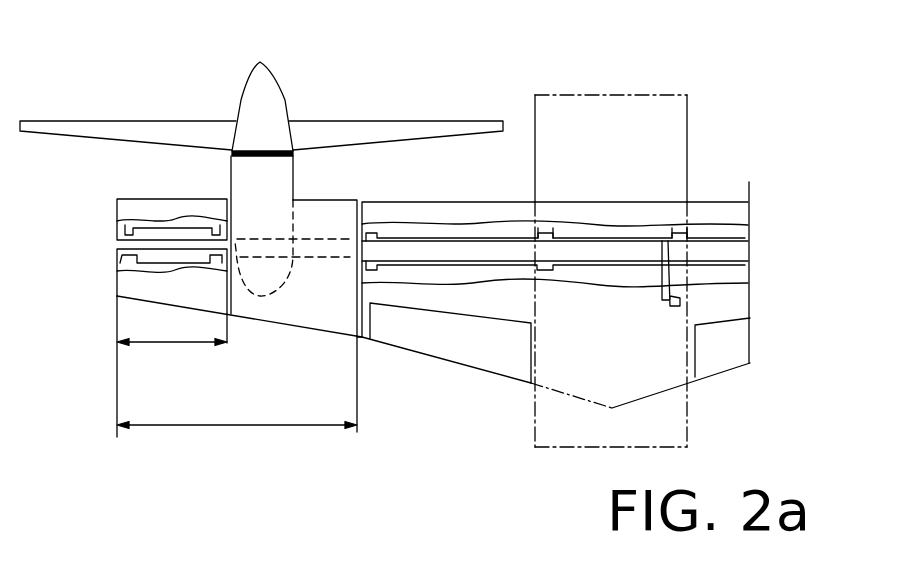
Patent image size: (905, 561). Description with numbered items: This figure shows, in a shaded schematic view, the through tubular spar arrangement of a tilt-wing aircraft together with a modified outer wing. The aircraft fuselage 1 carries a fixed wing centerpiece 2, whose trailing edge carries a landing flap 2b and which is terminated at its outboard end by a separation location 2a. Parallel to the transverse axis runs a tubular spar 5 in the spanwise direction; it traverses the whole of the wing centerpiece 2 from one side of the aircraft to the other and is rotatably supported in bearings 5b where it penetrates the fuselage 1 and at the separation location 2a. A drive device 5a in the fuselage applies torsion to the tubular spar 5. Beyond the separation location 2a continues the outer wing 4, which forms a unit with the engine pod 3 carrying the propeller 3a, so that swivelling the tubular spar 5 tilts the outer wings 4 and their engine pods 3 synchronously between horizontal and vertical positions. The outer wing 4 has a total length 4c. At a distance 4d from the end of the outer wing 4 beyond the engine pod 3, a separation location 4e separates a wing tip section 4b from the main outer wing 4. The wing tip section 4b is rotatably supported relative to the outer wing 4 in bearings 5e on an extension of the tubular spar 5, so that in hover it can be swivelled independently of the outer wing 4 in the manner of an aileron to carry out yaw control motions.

The aircraft fuselage 1 is at (667, 157).
The wing centerpiece 2 is at (447, 293).
The separation location 2a is at (365, 343).
The landing flap 2b is at (468, 353).
The engine pod 3 is at (268, 93).
The propeller 3a is at (152, 122).
The outer wing 4 is at (321, 294).
The wing tip section 4b is at (130, 283).
The total length 4c is at (227, 426).
The distance 4d is at (157, 343).
The separation location 4e is at (233, 326).
The tubular spar 5 is at (457, 247).
The drive device 5a is at (677, 306).
The bearings 5b is at (377, 232).
The bearings 5e is at (212, 228).